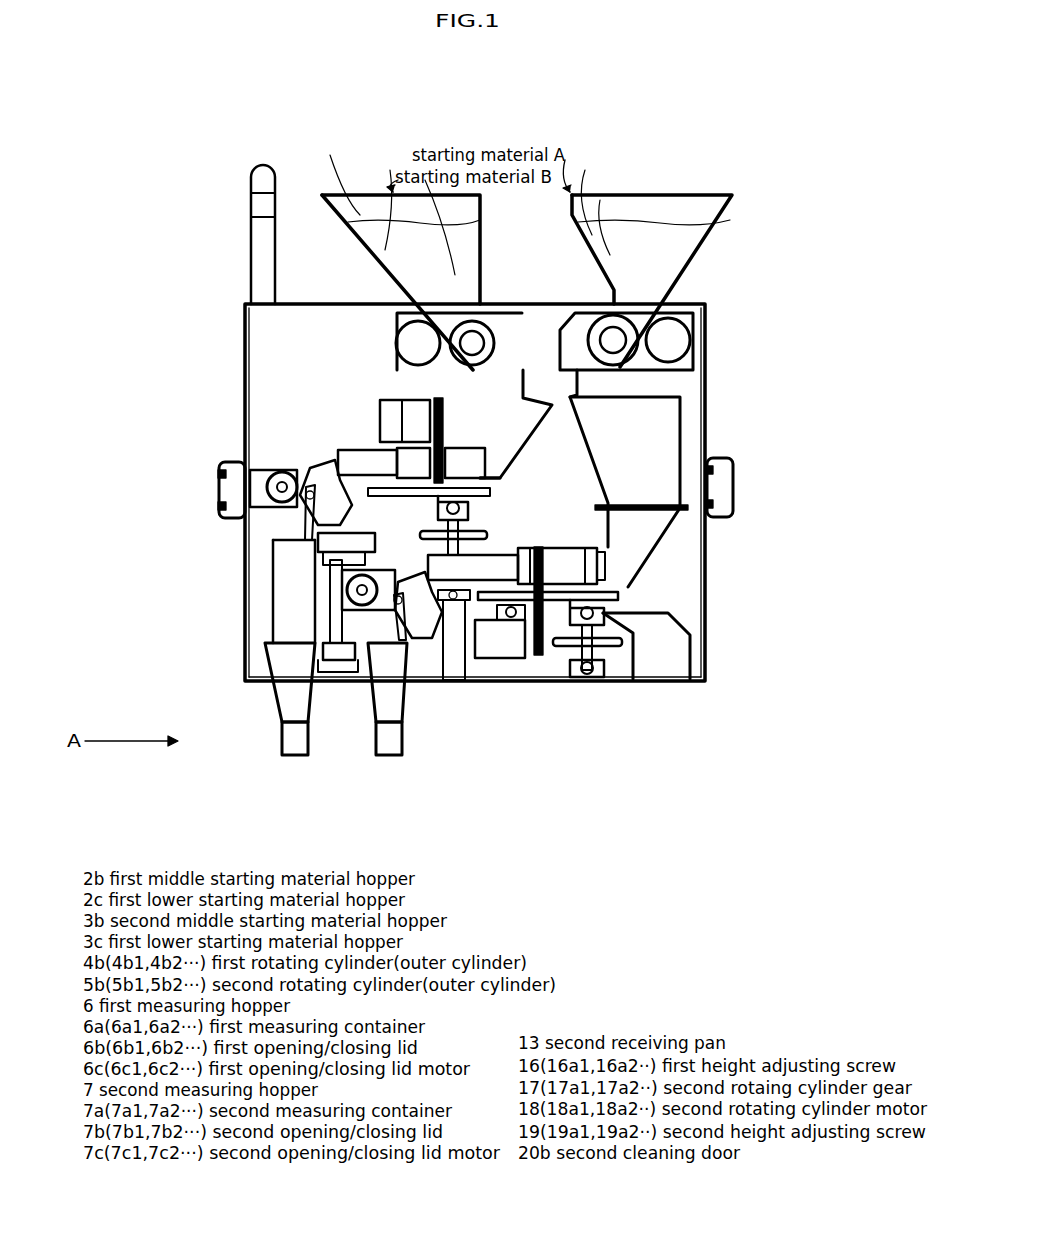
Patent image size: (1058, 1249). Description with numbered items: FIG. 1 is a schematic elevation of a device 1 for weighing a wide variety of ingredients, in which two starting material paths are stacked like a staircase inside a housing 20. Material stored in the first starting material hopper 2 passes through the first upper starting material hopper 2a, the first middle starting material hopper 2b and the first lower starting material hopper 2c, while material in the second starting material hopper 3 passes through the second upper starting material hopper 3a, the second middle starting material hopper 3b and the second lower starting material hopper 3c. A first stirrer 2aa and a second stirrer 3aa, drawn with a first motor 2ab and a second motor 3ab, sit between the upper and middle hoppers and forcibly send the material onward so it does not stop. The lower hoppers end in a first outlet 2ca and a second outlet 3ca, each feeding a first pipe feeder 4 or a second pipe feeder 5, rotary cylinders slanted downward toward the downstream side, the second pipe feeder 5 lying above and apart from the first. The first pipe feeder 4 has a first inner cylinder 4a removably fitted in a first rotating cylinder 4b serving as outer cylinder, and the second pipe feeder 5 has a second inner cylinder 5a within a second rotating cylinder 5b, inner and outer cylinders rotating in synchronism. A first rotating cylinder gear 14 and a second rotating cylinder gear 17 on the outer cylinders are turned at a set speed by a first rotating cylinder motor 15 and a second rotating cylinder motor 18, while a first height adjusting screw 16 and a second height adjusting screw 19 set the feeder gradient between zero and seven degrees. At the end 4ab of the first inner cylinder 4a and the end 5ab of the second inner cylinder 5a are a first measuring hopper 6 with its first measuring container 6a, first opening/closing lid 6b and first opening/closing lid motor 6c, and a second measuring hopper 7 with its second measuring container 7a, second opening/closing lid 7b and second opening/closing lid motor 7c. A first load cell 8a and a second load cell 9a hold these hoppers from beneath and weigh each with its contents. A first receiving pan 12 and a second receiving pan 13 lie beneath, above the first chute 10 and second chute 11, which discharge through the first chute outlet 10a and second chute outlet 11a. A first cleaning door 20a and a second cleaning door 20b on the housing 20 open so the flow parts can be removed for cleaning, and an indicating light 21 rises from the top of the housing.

The device for weighing a wide variety of ingredients 1 is at (525, 90).
The first starting material hopper 2 is at (737, 399).
The first upper starting material hopper 2a is at (590, 190).
The first stirrer 2aa is at (613, 340).
The first motor 2ab is at (655, 352).
The first middle starting material hopper 2b is at (577, 380).
The first lower starting material hopper 2c is at (660, 592).
The first outlet 2ca is at (648, 642).
The second starting material hopper 3 is at (594, 342).
The second upper starting material hopper 3a is at (335, 190).
The second stirrer 3aa is at (418, 343).
The second motor 3ab is at (472, 343).
The second middle starting material hopper 3b is at (670, 343).
The second lower starting material hopper 3c is at (495, 500).
The second outlet 3ca is at (565, 540).
The first pipe feeder 4 is at (500, 436).
The first inner cylinder 4a is at (560, 565).
The end of first inner cylinder 4ab is at (395, 478).
The first rotating cylinder (outer cylinder) 4b is at (600, 572).
The second pipe feeder 5 is at (506, 368).
The second inner cylinder 5a is at (470, 462).
The end of second inner cylinder 5ab is at (345, 455).
The second rotating cylinder (outer cylinder) 5b is at (455, 470).
The first measuring hopper 6 is at (253, 497).
The first measuring container 6a is at (425, 595).
The first opening/closing lid 6b is at (395, 618).
The first opening/closing lid motor 6c is at (350, 588).
The second measuring hopper 7 is at (206, 428).
The second measuring container 7a is at (335, 468).
The second opening/closing lid 7b is at (305, 520).
The second opening/closing lid motor 7c is at (268, 485).
The first load cell 8a is at (500, 620).
The second load cell 9a is at (310, 538).
The first chute 10 is at (489, 727).
The first chute outlet 10a is at (388, 747).
The second chute 11 is at (222, 735).
The second chute outlet 11a is at (268, 707).
The first receiving pan 12 is at (610, 598).
The second receiving pan 13 is at (540, 492).
The first rotating cylinder gear 14 is at (540, 640).
The first rotating cylinder motor 15 is at (505, 640).
The first height adjusting screw 16 is at (600, 640).
The second rotating cylinder gear 17 is at (440, 400).
The second rotating cylinder motor 18 is at (405, 410).
The second height adjusting screw 19 is at (445, 470).
The housing 20 is at (712, 683).
The first cleaning door 20a is at (668, 618).
The second cleaning door 20b is at (252, 652).
The indicating light 21 is at (263, 172).